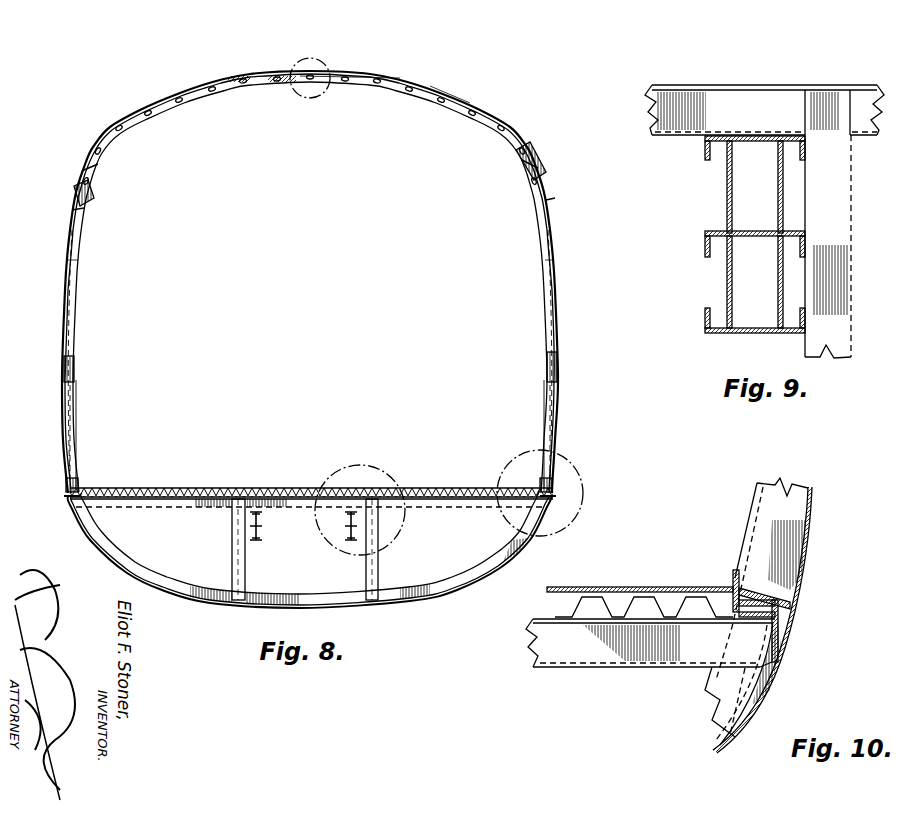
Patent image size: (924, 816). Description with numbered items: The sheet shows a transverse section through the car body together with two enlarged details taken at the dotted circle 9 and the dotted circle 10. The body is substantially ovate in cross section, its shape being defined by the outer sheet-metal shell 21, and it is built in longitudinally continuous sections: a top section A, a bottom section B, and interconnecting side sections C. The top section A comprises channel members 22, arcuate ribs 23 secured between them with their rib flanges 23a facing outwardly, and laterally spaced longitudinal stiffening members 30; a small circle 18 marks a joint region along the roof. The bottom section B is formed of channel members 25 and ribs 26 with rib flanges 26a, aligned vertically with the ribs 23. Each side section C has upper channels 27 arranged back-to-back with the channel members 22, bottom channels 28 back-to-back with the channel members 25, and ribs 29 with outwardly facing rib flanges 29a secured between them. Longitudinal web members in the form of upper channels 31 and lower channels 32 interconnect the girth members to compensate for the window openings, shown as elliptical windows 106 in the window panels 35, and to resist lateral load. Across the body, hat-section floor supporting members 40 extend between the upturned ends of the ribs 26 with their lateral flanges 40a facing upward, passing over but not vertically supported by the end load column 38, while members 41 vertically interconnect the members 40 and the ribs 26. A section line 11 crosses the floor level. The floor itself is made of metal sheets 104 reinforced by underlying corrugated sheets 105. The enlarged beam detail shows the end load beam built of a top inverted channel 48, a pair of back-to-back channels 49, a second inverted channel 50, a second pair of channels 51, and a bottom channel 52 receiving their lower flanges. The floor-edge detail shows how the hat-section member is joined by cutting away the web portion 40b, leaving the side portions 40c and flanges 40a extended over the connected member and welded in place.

In FIG. 8, the joint detail circle 18 is at (318, 61).
In FIG. 8, the outer sheet-metal shell 21 is at (506, 124).
In FIG. 10, the outer sheet-metal shell 21 is at (813, 522).
In FIG. 8, the channel members 22 is at (86, 154).
In FIG. 8, the arcuate ribs 23 is at (158, 102).
In FIG. 8, the rib flanges 23a is at (356, 82).
In FIG. 8, the longitudinal stiffening members 30 is at (253, 78).
In FIG. 8, the top section A is at (457, 93).
In FIG. 8, the upper channels 27 is at (90, 188).
In FIG. 8, the upper channels 31 is at (84, 213).
In FIG. 8, the window panels 35 is at (79, 268).
In FIG. 8, the windows of elliptical character 106 is at (66, 297).
In FIG. 8, the lower channels 32 is at (69, 361).
In FIG. 8, the side sections C is at (60, 393).
In FIG. 8, the ribs 29 is at (71, 421).
In FIG. 8, the rib flanges 29a is at (72, 383).
In FIG. 10, the rib flanges 29a is at (803, 490).
In FIG. 8, the bottom channels 28 is at (79, 486).
In FIG. 10, the bottom channels 28 is at (790, 583).
In FIG. 8, the channel members 25 is at (558, 497).
In FIG. 10, the channel members 25 is at (787, 617).
In FIG. 8, the section line 11 is at (70, 495).
In FIG. 8, the floor supporting members 40 is at (175, 491).
In FIG. 9, the floor supporting members 40 is at (779, 97).
In FIG. 10, the floor supporting members 40 is at (607, 655).
In FIG. 8, the lateral flanges 40a is at (210, 494).
In FIG. 9, the lateral flanges 40a is at (721, 88).
In FIG. 10, the lateral flanges 40a is at (570, 625).
In FIG. 10, the web portion 40b is at (716, 670).
In FIG. 10, the side portions 40c is at (778, 650).
In FIG. 8, the metal sheets 104 is at (410, 488).
In FIG. 10, the metal sheets 104 is at (610, 587).
In FIG. 8, the corrugated sheets 105 is at (455, 488).
In FIG. 10, the corrugated sheets 105 is at (668, 598).
In FIG. 8, the dotted circle 9 is at (363, 484).
In FIG. 8, the dotted circle 10 is at (574, 472).
In FIG. 8, the floor supporting members 41 is at (233, 554).
In FIG. 9, the floor supporting members 41 is at (849, 182).
In FIG. 8, the end load column 38 is at (258, 544).
In FIG. 9, the end load column 38 is at (722, 206).
In FIG. 9, the top inverted channel 48 is at (704, 158).
In FIG. 9, the channels 49 is at (780, 188).
In FIG. 9, the second inverted channel 50 is at (707, 242).
In FIG. 9, the second pair of channels 51 is at (780, 295).
In FIG. 9, the channel 52 is at (745, 336).
In FIG. 8, the ribs 26 is at (416, 607).
In FIG. 10, the ribs 26 is at (732, 708).
In FIG. 8, the rib flanges 26a is at (452, 600).
In FIG. 10, the rib flanges 26a is at (757, 695).
In FIG. 8, the bottom section B is at (215, 606).